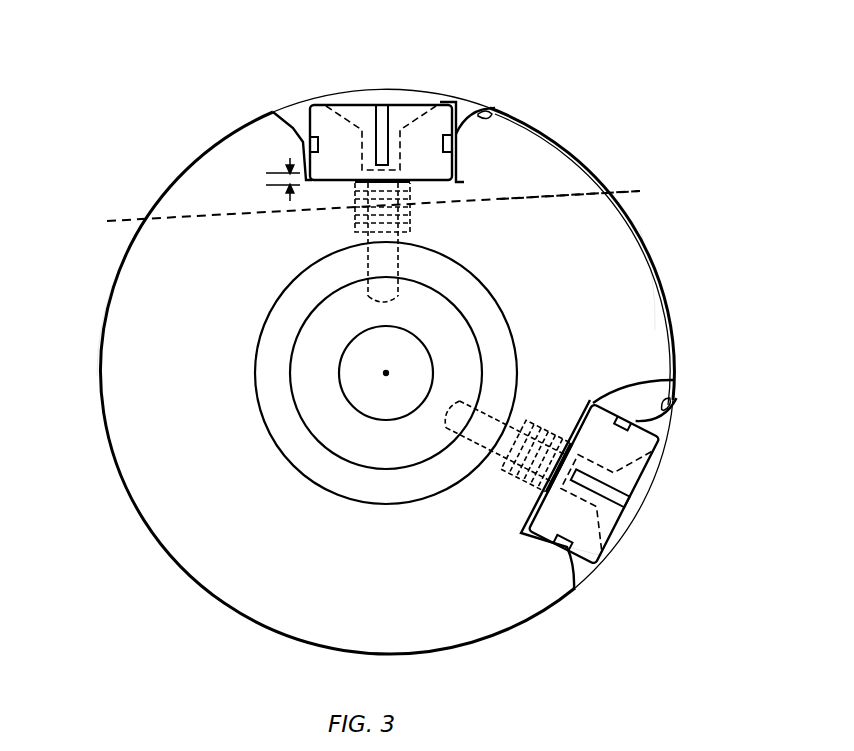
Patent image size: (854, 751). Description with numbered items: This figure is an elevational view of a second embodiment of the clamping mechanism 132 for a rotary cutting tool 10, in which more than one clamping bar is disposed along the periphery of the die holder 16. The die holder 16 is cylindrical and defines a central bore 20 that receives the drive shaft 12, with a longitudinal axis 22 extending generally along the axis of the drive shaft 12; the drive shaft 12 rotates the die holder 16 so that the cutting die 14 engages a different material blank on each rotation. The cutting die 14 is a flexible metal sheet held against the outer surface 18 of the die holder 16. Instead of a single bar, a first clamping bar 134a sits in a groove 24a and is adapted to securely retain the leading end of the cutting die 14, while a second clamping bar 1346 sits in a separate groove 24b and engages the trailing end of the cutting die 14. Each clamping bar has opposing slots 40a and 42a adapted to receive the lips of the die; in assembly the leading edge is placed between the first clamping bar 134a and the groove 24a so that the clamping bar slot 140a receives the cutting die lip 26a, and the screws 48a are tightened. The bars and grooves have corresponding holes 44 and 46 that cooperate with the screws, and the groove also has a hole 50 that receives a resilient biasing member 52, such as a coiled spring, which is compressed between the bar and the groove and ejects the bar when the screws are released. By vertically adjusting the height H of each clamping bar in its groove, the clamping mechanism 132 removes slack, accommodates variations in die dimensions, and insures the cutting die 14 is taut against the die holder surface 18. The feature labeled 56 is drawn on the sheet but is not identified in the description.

The rotary cutting tool 10 is at (95, 138).
The drive shaft 12 is at (350, 383).
The cutting die 14 is at (648, 252).
The die holder 16 is at (656, 318).
The outer surface 18 is at (663, 292).
The central bore 20 is at (255, 350).
The longitudinal axis 22 is at (386, 373).
The groove 24a is at (458, 178).
The groove 24b is at (673, 381).
The lip 26a is at (458, 144).
The slot 40a is at (565, 546).
The slot 42a is at (307, 147).
The hole 44 is at (348, 104).
The hole 46 is at (372, 263).
The screw 48a is at (408, 108).
The hole 50 is at (352, 211).
The resilient biasing member 52 is at (585, 195).
The retaining lip 56 is at (480, 117).
The clamping mechanism 132 is at (252, 75).
The first clamping bar 134a is at (446, 238).
The second clamping bar 1346 is at (640, 447).
The clamping bar slot 140a is at (458, 158).
The height H is at (272, 173).